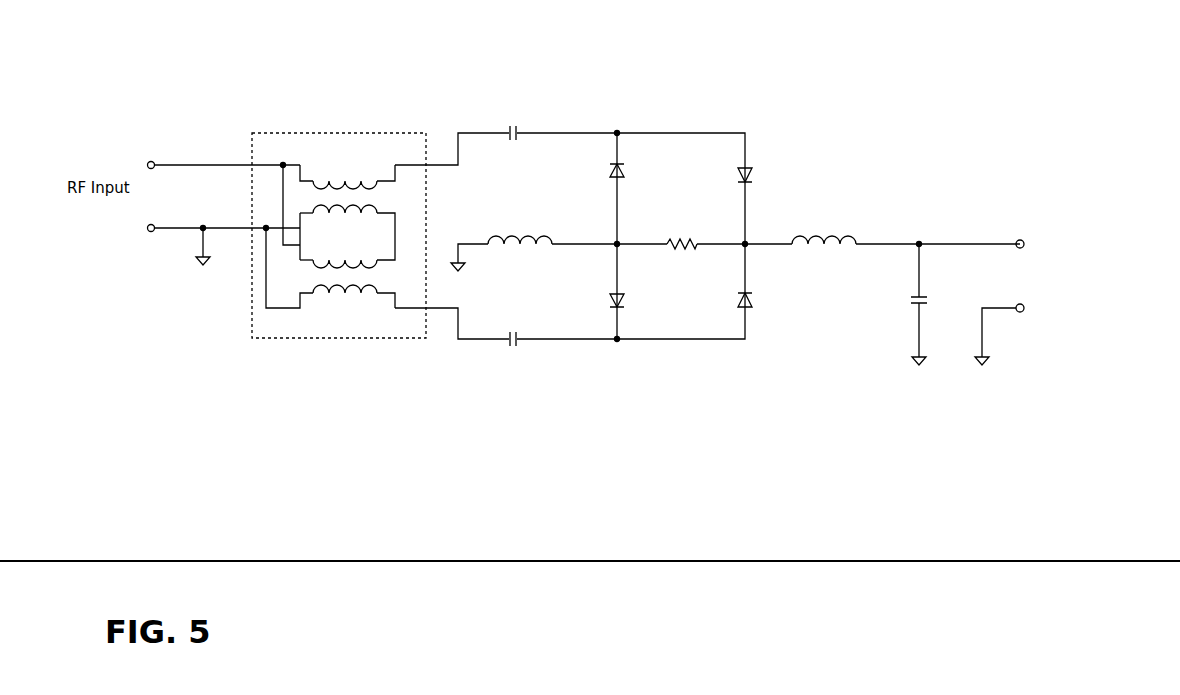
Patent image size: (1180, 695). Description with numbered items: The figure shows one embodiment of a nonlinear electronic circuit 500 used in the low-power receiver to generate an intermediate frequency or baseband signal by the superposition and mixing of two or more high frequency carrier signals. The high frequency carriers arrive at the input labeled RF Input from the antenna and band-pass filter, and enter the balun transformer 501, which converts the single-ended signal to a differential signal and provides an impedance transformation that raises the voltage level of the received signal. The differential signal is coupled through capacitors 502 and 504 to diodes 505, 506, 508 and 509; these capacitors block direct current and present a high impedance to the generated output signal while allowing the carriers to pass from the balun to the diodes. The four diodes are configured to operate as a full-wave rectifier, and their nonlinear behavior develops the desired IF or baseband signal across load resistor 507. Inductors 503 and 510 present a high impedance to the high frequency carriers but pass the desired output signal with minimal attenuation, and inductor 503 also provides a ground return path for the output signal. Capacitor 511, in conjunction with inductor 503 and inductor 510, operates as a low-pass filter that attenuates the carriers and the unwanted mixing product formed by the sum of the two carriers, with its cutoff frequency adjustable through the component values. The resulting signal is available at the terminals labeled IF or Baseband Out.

The nonlinear electronic circuit 500 is at (945, 52).
The balun transformer 501 is at (339, 223).
The capacitor 502 is at (518, 122).
The inductor 503 is at (520, 230).
The capacitor 504 is at (518, 328).
The diode 505 is at (637, 174).
The diode 506 is at (637, 304).
The load resistor 507 is at (683, 232).
The diode 508 is at (765, 175).
The diode 509 is at (765, 298).
The inductor 510 is at (824, 230).
The capacitor 511 is at (899, 304).